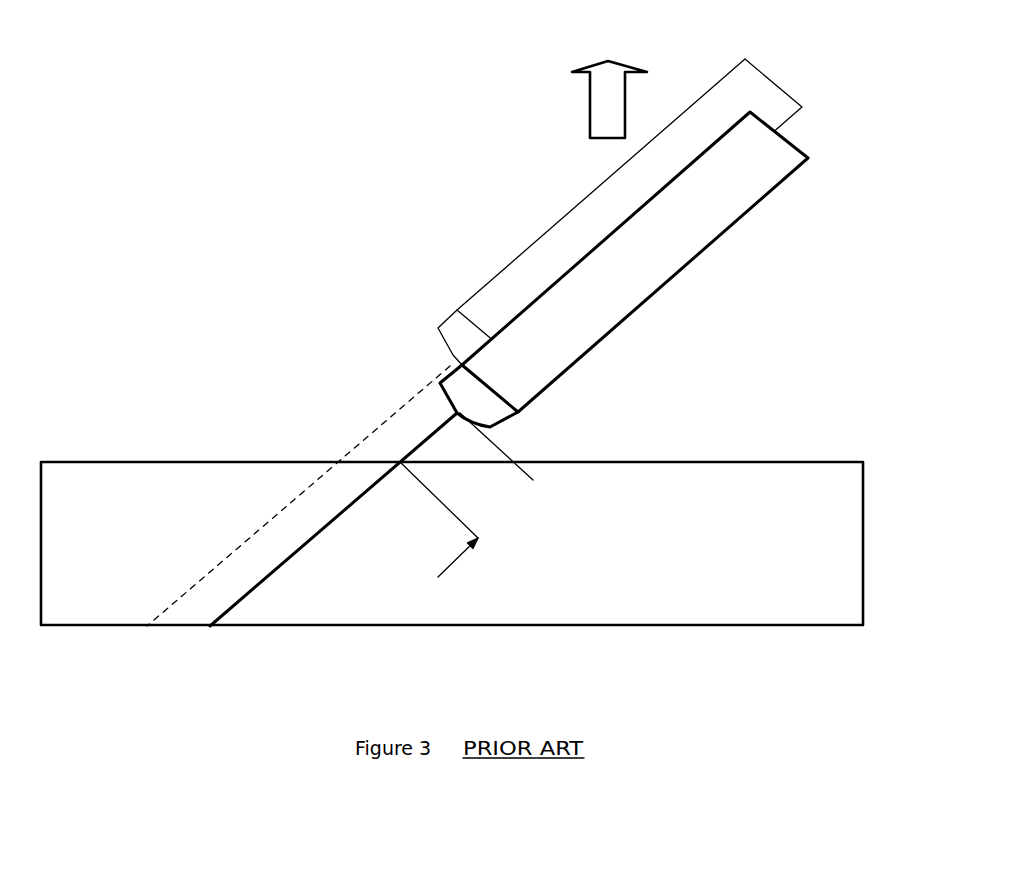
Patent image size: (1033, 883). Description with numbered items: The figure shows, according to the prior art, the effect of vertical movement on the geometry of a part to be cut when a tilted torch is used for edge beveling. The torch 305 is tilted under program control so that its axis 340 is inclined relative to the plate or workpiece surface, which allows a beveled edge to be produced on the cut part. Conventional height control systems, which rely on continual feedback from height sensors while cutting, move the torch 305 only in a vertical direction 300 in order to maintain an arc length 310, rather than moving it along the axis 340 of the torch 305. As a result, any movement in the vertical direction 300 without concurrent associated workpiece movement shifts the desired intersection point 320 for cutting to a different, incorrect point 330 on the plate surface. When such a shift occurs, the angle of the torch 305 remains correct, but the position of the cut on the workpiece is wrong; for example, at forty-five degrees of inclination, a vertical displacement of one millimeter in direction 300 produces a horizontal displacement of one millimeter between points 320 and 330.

The vertical direction 300 is at (609, 76).
The torch 305 is at (682, 270).
The arc length 310 is at (533, 480).
The intersection point 320 is at (400, 462).
The point 330 is at (335, 462).
The axis 340 is at (323, 530).